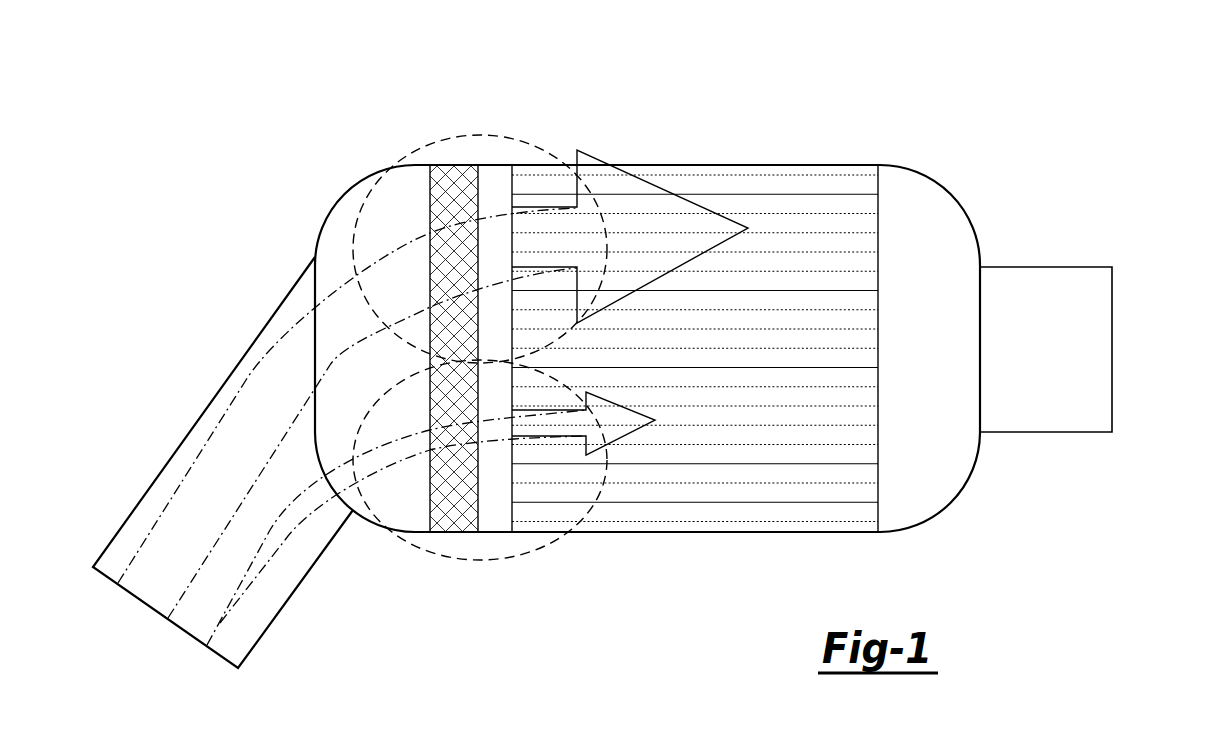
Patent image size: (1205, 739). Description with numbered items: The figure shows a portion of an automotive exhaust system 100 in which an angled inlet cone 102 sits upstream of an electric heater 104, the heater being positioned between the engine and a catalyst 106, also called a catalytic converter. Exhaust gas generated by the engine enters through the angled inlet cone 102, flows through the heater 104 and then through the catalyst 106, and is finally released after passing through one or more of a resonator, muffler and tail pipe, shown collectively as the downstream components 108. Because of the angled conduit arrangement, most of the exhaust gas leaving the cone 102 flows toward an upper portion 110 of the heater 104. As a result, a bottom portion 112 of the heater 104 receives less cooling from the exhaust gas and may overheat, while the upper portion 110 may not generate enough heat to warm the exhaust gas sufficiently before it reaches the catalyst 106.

The automotive exhaust system 100 is at (1003, 125).
The angled inlet cone 102 is at (207, 416).
The electric heater 104 is at (430, 218).
The catalyst 106 is at (788, 205).
The resonator, muffler, and/or tail pipe 108 is at (1053, 283).
The upper portion of the heater 110 is at (430, 146).
The bottom portion of the heater 112 is at (437, 556).